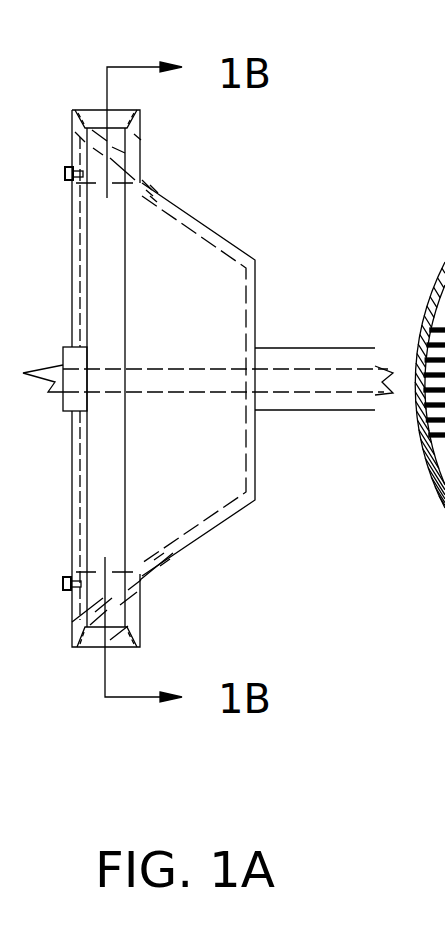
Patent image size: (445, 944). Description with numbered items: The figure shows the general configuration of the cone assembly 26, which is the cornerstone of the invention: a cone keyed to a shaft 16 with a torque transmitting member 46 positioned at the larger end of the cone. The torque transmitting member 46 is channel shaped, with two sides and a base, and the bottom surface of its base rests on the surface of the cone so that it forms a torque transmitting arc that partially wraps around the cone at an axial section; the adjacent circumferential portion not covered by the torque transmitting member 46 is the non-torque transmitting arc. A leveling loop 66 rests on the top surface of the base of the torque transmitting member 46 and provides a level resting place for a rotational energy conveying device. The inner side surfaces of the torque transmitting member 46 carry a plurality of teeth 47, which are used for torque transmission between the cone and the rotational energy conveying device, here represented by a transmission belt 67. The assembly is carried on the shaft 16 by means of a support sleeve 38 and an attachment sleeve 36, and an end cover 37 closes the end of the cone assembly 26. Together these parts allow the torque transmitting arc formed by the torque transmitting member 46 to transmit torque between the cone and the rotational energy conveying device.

The shaft 16 is at (283, 385).
The cone assembly 26 is at (167, 262).
The attachment sleeve 36 is at (278, 357).
The end cover 37 is at (73, 310).
The support sleeve 38 is at (80, 405).
The torque transmitting member 46 is at (138, 147).
The teeth 47 is at (128, 636).
The leveling loop 66 is at (118, 618).
The transmission belt 67 is at (112, 637).